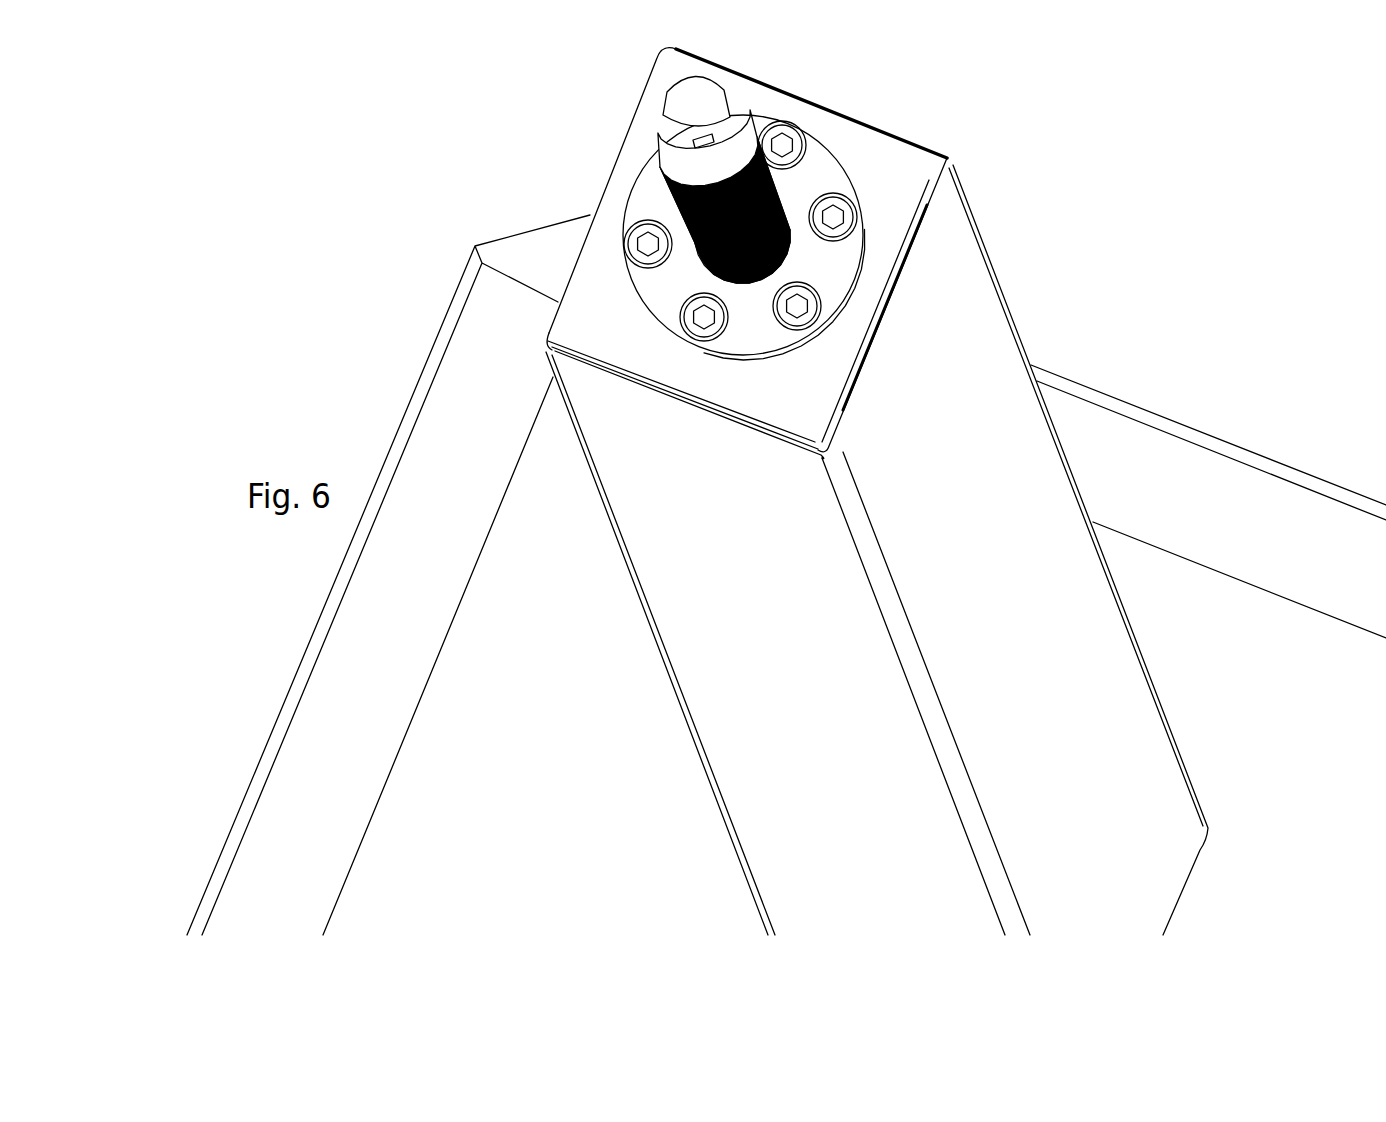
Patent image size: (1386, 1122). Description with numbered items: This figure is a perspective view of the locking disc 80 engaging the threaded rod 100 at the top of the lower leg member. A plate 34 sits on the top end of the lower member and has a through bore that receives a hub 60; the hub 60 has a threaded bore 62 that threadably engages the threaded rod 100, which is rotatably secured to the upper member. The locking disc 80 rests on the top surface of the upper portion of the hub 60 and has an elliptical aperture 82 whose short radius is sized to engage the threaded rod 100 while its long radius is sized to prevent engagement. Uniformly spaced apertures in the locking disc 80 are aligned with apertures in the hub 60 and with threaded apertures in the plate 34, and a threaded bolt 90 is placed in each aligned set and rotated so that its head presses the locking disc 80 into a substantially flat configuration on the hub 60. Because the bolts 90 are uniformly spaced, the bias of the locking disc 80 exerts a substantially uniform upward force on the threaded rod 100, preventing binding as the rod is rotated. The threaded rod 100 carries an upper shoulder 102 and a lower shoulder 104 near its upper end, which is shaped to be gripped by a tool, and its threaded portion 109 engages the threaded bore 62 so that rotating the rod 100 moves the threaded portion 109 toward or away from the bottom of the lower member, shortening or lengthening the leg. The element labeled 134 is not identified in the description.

The plate 34 is at (888, 162).
The hub 60 is at (641, 386).
The threaded bore 62 is at (722, 280).
The locking disc 80 is at (668, 295).
The elliptical aperture 82 is at (787, 253).
The threaded bolt 90 is at (648, 244).
The threaded rod 100 is at (670, 147).
The upper shoulder 102 is at (773, 117).
The lower shoulder 104 is at (717, 133).
The threaded portion 109 is at (788, 202).
The locking pin 134 is at (707, 135).